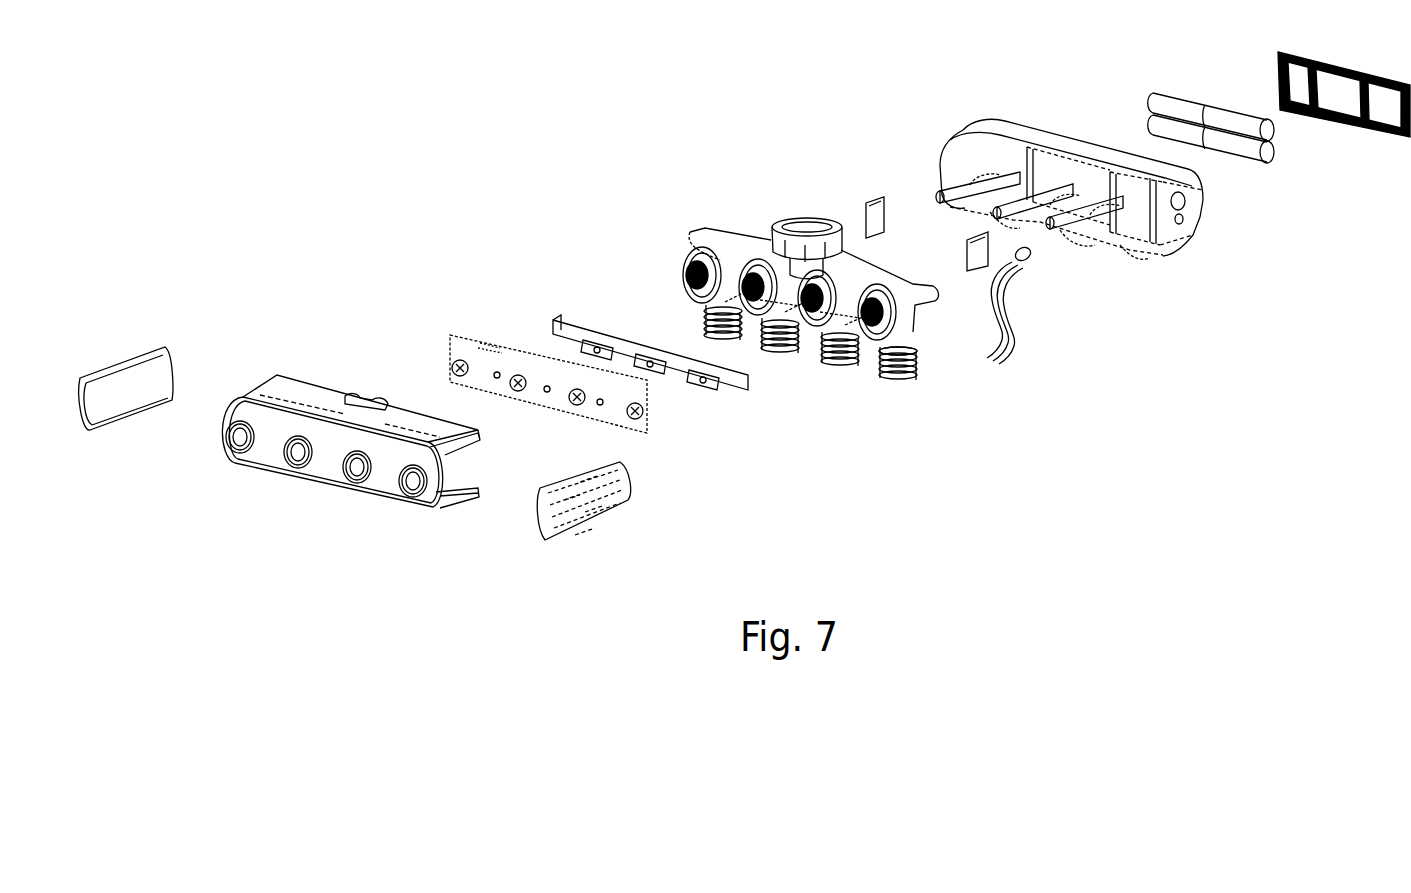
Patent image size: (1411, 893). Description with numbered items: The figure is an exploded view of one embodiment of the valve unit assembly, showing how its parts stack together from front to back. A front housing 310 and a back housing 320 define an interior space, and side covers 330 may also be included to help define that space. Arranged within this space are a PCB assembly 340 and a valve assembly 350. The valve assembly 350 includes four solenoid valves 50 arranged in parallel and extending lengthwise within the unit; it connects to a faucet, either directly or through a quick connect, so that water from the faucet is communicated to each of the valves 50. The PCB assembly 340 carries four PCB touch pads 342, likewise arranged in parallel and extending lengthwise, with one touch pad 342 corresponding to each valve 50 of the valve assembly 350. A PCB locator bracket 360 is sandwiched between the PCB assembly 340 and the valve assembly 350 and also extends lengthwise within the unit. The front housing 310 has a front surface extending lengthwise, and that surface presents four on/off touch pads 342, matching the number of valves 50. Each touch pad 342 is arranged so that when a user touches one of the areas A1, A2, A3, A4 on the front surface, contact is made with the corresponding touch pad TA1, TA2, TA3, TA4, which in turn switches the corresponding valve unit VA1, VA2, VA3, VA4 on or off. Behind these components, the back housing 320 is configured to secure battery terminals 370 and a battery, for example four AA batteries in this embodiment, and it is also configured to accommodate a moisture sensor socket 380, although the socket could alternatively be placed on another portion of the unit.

The valve 50 is at (792, 331).
The front housing 310 is at (333, 474).
The back housing 320 is at (1015, 128).
The side cover 330 is at (122, 363).
The PCB assembly 340 is at (544, 370).
The PCB touch pad 342 is at (636, 413).
The valve assembly 350 is at (905, 378).
The PCB locator bracket 360 is at (552, 326).
The battery terminal 370 is at (968, 249).
The moisture sensor socket 380 is at (1030, 262).
The touch area A1 is at (232, 433).
The touch area A2 is at (282, 470).
The touch area A3 is at (342, 485).
The touch area A4 is at (417, 503).
The touch pad TA1 is at (454, 368).
The touch pad TA2 is at (518, 386).
The touch pad TA3 is at (578, 401).
The touch pad TA4 is at (641, 412).
The valve unit VA1 is at (705, 306).
The valve unit VA2 is at (763, 312).
The valve unit VA3 is at (824, 326).
The valve unit VA4 is at (915, 340).